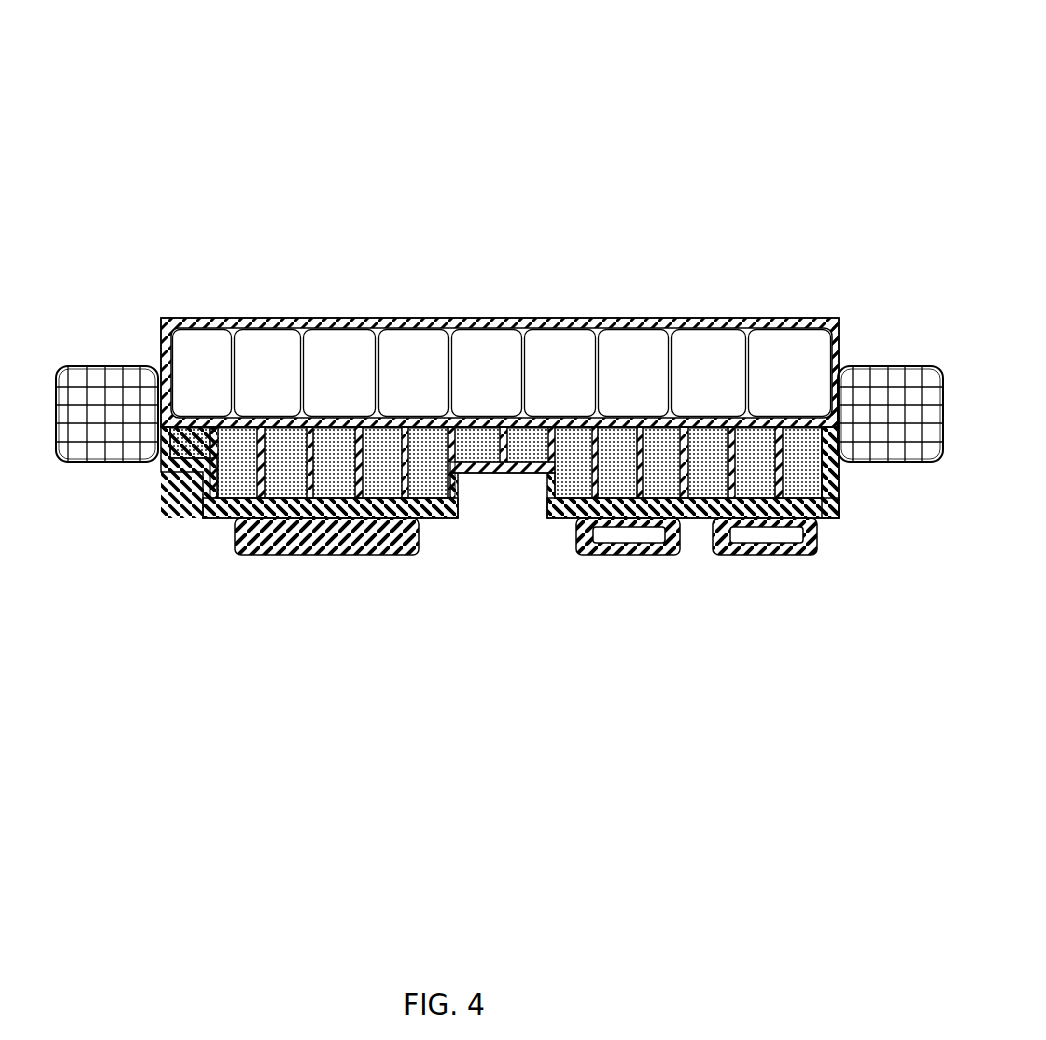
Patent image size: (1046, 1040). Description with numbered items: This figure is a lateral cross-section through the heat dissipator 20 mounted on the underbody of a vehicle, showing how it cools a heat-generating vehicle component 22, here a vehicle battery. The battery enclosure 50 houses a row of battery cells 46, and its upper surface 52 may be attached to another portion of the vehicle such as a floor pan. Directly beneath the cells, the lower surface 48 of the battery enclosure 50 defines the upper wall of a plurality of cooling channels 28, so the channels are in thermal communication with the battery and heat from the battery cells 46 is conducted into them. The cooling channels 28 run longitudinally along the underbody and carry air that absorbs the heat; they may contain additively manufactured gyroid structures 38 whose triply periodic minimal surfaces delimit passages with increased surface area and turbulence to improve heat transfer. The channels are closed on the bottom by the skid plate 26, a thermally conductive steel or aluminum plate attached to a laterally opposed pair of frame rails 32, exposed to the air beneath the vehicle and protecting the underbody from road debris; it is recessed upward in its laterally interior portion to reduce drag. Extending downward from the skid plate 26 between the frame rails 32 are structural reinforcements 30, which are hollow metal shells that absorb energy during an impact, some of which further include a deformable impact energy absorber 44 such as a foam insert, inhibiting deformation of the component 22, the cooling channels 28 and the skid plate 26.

The heat dissipator 20 is at (636, 77).
The vehicle component 22 is at (203, 333).
The skid plate 26 is at (433, 518).
The cooling channels 28 is at (230, 518).
The structural reinforcements 30 is at (327, 556).
The frame rails 32 is at (106, 388).
The gyroid structures 38 is at (178, 468).
The deformable impact energy absorber 44 is at (660, 538).
The battery cells 46 is at (277, 338).
The lower surface 48 is at (837, 440).
The battery enclosure 50 is at (840, 322).
The upper surface 52 is at (178, 332).